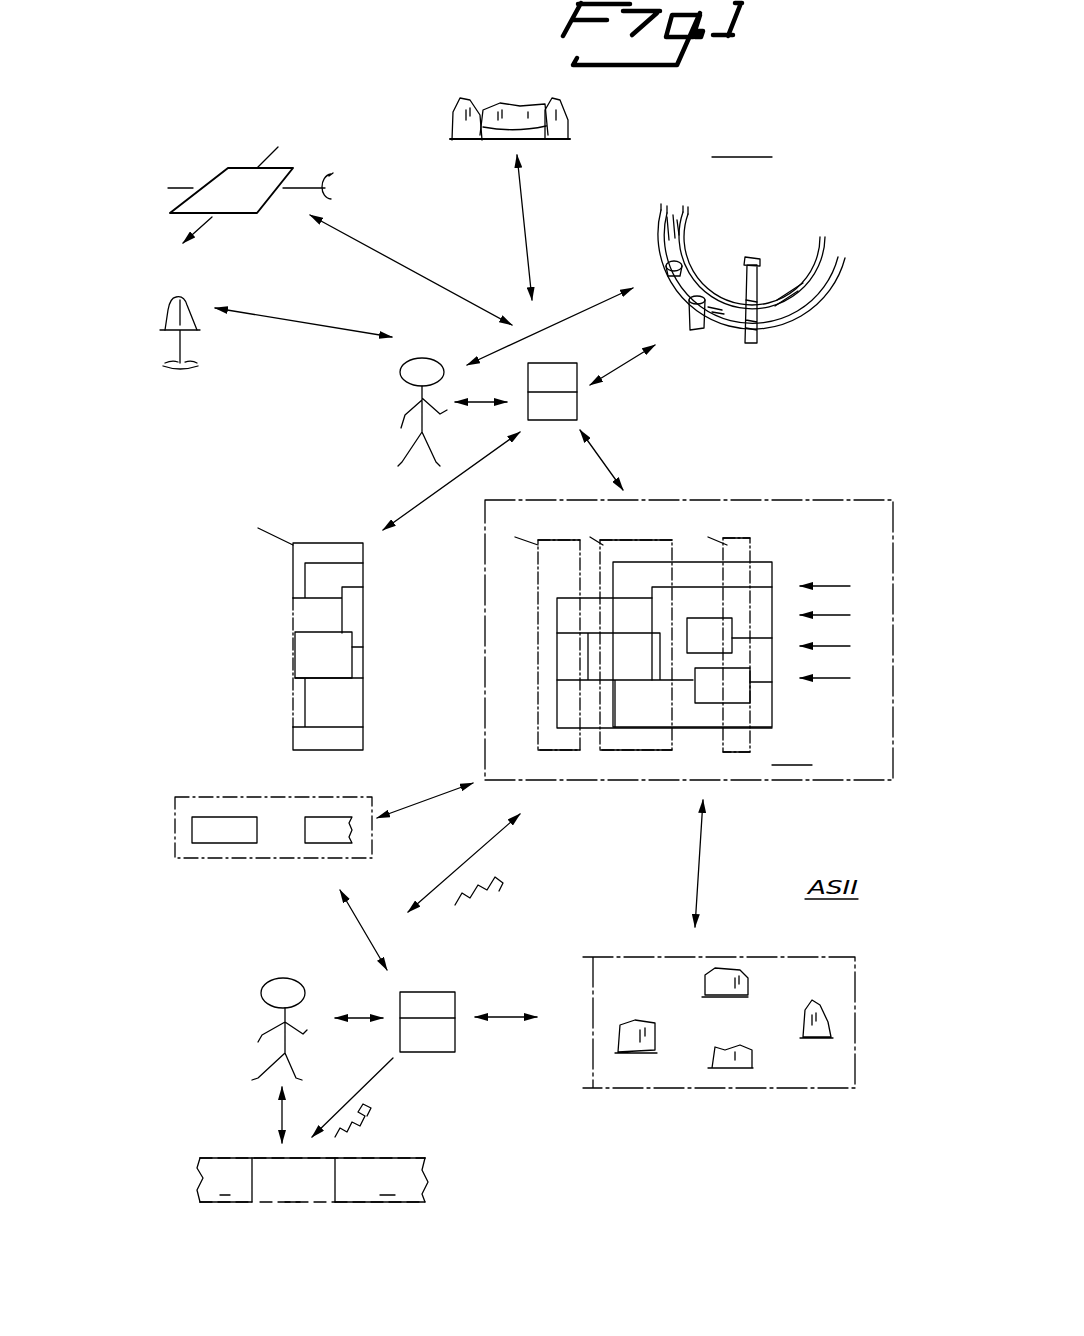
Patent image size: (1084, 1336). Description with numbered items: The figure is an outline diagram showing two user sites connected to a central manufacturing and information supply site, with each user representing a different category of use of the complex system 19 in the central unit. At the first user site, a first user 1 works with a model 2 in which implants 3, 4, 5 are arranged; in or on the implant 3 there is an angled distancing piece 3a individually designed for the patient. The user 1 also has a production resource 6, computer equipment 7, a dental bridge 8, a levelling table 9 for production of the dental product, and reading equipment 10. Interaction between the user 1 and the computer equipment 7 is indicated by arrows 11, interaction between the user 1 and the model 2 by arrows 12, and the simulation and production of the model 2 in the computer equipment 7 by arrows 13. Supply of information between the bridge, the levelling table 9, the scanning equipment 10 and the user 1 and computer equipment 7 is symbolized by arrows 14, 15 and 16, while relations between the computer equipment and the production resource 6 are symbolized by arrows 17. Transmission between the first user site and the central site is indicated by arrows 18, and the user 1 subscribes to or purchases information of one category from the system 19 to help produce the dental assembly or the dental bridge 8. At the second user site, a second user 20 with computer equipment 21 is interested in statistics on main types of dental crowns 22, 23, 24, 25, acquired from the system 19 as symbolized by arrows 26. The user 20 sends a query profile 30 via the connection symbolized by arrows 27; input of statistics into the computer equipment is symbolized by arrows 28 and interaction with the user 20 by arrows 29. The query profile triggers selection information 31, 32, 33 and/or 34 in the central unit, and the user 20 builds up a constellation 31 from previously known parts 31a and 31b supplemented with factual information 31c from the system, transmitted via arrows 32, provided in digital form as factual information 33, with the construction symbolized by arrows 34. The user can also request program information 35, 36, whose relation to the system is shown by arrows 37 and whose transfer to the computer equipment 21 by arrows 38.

The first user 1 is at (404, 392).
The model 2 is at (808, 306).
The implant 3 is at (758, 318).
The angled distancing piece 3a is at (760, 257).
The implant 4 is at (701, 331).
The implant 5 is at (665, 263).
The production resource 6 is at (288, 578).
The computer equipment 7 is at (578, 393).
The dental bridge 8 is at (450, 108).
The levelling table 9 is at (220, 155).
The reading equipment 10 is at (166, 295).
The arrows 11 is at (481, 419).
The arrows 12 is at (550, 326).
The arrows 13 is at (622, 358).
The arrows 14 is at (534, 227).
The arrows 15 is at (411, 270).
The arrows 16 is at (303, 317).
The arrows 17 is at (451, 481).
The arrows 18 is at (597, 460).
The system 19 is at (713, 483).
The second user 20 is at (253, 1010).
The computer equipment 21 is at (445, 1045).
The dental crown 22 is at (732, 1065).
The dental crown 23 is at (637, 1045).
The dental crown 24 is at (826, 1008).
The dental crown 25 is at (730, 975).
The arrows 26 is at (685, 863).
The arrows 27 is at (464, 863).
The arrows 28 is at (506, 1004).
The arrows 29 is at (359, 1037).
The query profile 30 is at (500, 877).
The selection information / constellation 31 is at (197, 1120).
The previously known part 31a is at (225, 1192).
The previously known part 31b is at (388, 1195).
The factual information 31c is at (292, 1207).
The selection information / arrows 32 is at (595, 870).
The selection information / factual information 33 is at (370, 1115).
The selection information / arrows 34 is at (565, 905).
The program information 35 is at (223, 838).
The program information 36 is at (325, 838).
The arrows 37 is at (425, 800).
The arrows 38 is at (363, 930).